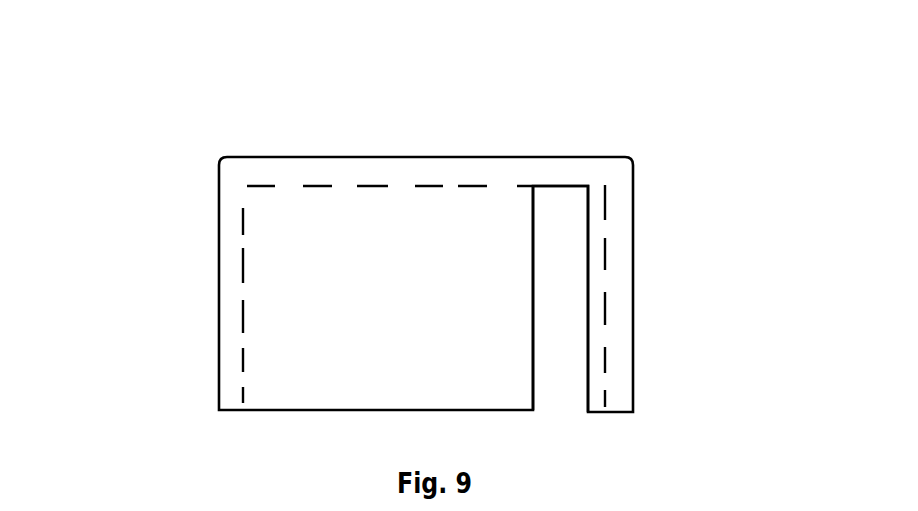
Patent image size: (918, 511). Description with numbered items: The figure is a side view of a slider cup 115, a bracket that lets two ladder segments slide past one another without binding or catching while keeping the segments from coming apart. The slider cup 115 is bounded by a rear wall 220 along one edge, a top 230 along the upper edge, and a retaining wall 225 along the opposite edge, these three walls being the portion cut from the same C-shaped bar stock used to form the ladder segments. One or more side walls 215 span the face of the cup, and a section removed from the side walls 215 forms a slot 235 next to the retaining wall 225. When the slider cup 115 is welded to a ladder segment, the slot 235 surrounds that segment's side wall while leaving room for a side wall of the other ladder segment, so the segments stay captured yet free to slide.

The slider cup 115 is at (428, 247).
The side wall 215 is at (325, 330).
The rear wall 220 is at (232, 255).
The retaining wall 225 is at (620, 258).
The top 230 is at (492, 165).
The slot 235 is at (565, 387).